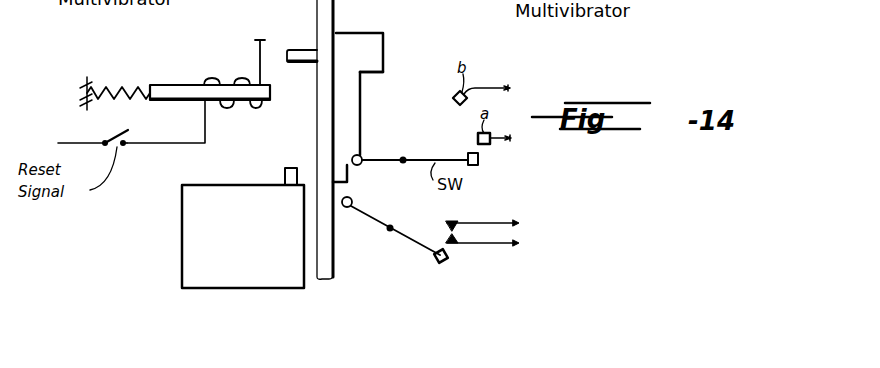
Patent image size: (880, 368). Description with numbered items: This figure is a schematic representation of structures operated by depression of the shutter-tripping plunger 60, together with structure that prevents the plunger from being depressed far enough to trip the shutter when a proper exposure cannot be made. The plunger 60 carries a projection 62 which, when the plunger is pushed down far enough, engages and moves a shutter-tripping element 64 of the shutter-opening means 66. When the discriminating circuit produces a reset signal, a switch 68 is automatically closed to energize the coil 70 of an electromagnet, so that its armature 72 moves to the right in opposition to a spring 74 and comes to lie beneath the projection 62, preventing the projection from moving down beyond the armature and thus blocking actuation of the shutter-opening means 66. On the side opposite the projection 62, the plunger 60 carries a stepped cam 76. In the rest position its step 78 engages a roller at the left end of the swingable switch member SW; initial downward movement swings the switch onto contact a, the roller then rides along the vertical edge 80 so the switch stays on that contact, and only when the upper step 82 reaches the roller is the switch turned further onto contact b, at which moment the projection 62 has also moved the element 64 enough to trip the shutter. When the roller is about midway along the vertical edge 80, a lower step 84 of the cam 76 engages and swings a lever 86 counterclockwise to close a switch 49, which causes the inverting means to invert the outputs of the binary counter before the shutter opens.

The switch 49 is at (515, 234).
The shutter-tripping plunger 60 is at (329, 5).
The projection 62 is at (288, 50).
The shutter-tripping element 64 is at (290, 168).
The shutter-opening means 66 is at (182, 262).
The switch 68 is at (131, 132).
The coil 70 is at (238, 82).
The armature 72 is at (177, 86).
The spring 74 is at (115, 82).
The stepped cam 76 is at (375, 43).
The step 78 is at (358, 150).
The vertical edge 80 is at (362, 105).
The upper step 82 is at (375, 74).
The lower step 84 is at (350, 182).
The lever 86 is at (407, 243).